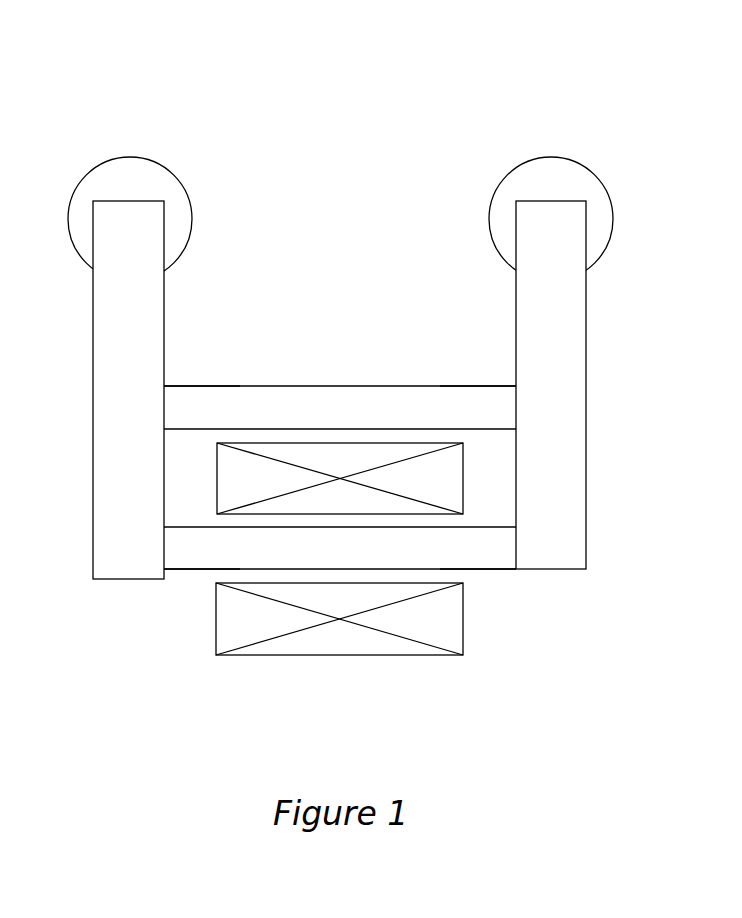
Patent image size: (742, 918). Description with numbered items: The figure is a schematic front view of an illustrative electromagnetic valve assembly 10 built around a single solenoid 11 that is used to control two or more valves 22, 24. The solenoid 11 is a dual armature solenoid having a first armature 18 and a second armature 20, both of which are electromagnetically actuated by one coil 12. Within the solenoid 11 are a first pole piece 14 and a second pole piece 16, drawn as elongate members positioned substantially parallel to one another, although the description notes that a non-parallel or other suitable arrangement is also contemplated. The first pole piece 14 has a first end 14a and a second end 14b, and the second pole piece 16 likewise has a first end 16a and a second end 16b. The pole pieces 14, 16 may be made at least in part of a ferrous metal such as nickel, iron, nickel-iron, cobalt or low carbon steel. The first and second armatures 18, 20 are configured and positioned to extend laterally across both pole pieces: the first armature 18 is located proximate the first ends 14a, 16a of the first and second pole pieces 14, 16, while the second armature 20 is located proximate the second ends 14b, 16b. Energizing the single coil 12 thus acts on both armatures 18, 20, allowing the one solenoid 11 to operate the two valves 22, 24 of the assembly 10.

The electromagnetic valve assembly 10 is at (445, 90).
The solenoid 11 is at (643, 309).
The coil 12 is at (455, 478).
The first pole piece 14 is at (215, 562).
The first end of first pole piece 14a is at (175, 557).
The second end of first pole piece 14b is at (508, 557).
The second pole piece 16 is at (338, 392).
The first end of second pole piece 16a is at (177, 392).
The second end of second pole piece 16b is at (500, 392).
The first armature 18 is at (103, 412).
The second armature 20 is at (577, 400).
The valve 22 is at (128, 163).
The valve 24 is at (548, 165).